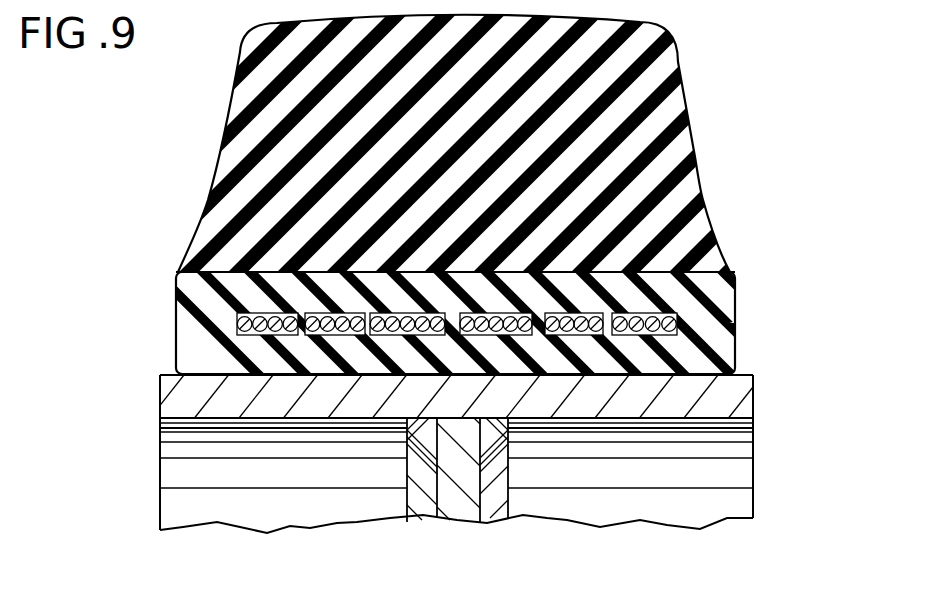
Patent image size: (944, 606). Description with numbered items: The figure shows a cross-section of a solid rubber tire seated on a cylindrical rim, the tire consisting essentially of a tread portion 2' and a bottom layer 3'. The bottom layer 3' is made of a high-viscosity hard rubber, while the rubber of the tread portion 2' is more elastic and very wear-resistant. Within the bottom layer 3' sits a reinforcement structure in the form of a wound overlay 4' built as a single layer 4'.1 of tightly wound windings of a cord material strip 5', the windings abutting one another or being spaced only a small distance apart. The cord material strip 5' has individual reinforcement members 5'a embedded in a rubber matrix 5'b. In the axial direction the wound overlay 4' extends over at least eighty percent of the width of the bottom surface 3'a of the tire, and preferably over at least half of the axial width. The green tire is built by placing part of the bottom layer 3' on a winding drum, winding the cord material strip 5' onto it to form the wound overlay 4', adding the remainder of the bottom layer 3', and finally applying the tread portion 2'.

The tread portion 2' is at (466, 143).
The bottom layer 3' is at (495, 336).
The bottom surface 3'a is at (456, 472).
The wound overlay 4' is at (483, 297).
The single layer 4'.1 is at (599, 334).
The cord material strip 5' is at (200, 312).
The reinforcement members 5'a is at (335, 442).
The rubber matrix 5'b is at (584, 441).